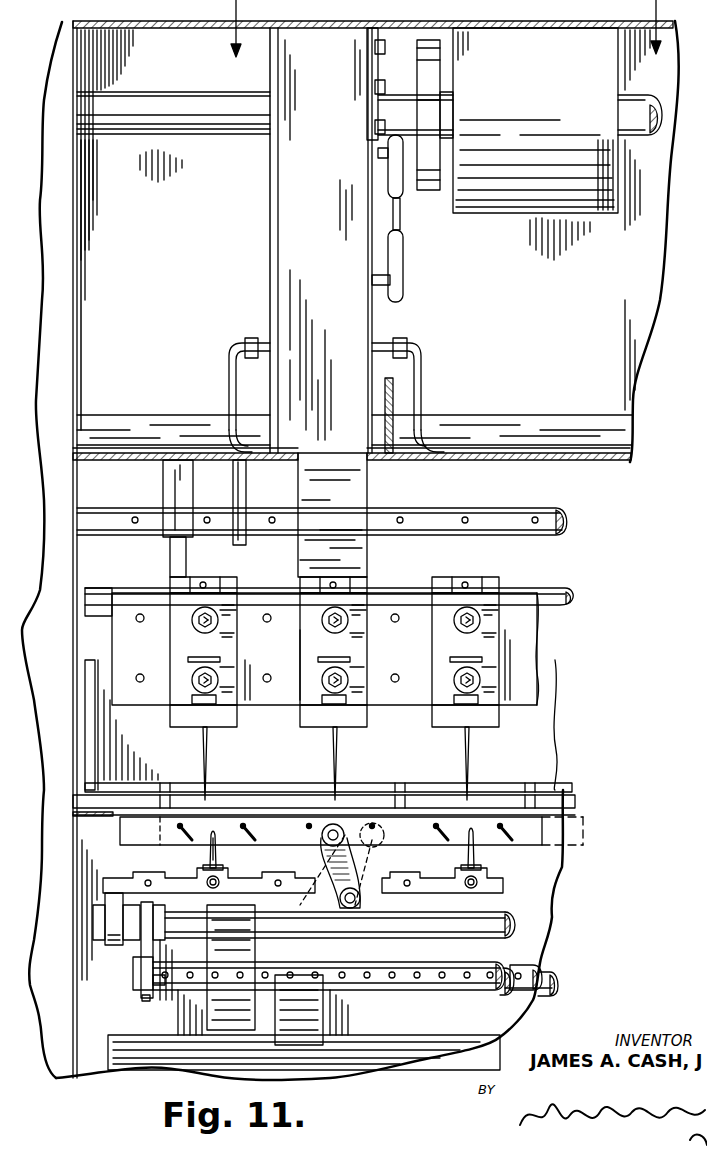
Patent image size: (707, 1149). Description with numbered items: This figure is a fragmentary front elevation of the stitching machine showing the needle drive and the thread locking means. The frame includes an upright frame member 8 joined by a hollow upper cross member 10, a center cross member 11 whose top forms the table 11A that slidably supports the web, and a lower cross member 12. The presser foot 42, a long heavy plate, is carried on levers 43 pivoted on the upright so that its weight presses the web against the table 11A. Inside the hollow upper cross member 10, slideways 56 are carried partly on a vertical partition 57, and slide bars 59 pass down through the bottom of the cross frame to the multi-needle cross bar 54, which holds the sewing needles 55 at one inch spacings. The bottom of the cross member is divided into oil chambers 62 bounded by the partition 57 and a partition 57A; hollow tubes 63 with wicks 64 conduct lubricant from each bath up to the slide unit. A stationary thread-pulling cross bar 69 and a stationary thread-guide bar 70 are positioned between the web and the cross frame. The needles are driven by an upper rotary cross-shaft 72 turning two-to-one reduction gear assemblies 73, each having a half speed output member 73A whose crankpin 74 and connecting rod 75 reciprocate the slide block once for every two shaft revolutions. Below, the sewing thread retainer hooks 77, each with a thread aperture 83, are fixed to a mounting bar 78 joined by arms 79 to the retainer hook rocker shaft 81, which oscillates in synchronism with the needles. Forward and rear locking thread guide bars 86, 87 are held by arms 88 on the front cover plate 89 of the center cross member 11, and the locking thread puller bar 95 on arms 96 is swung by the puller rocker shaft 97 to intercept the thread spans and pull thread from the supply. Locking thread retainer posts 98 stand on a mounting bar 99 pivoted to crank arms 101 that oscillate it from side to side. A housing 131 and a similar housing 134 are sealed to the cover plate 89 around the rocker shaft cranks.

The upright frame member 8 is at (58, 366).
The upper cross member 10 is at (597, 471).
The center cross member 11 is at (570, 883).
The table 11A is at (163, 812).
The lower cross member 12 is at (447, 40).
The presser foot 42 is at (176, 783).
The lever 43 is at (90, 720).
The multi-needle cross bar 54 is at (278, 649).
The sewing needle 55 is at (207, 744).
The slideway 56 is at (336, 259).
The partition 57 is at (272, 243).
The partition 57A is at (394, 388).
The slide bar 59 is at (351, 503).
The oil chamber 62 is at (132, 440).
The hollow tube 63 is at (232, 358).
The wick 64 is at (222, 440).
The thread-pulling cross bar 69 is at (516, 590).
The thread-guide bar 70 is at (490, 510).
The upper rotary cross-shaft 72 is at (210, 108).
The reduction gear assembly 73 is at (545, 106).
The half speed rotary output member 73A is at (430, 84).
The crankpin 74 is at (405, 170).
The connecting rod 75 is at (402, 218).
The sewing thread retainer hook 77 is at (210, 850).
The mounting bar 78 is at (295, 887).
The arm 79 is at (115, 899).
The retainer hook rocker shaft 81 is at (416, 926).
The aperture 83 is at (216, 842).
The forward locking thread guide bar 86 is at (360, 965).
The rear locking thread guide bar 87 is at (519, 965).
The arm 88 is at (142, 998).
The front cover plate 89 is at (542, 910).
The locking thread puller bar 95 is at (508, 968).
The arm 96 is at (142, 948).
The locking thread puller rocker shaft 97 is at (548, 980).
The locking thread retainer post 98 is at (180, 830).
The retainer post mounting bar 99 is at (122, 840).
The crank arm 101 is at (340, 895).
The housing 131 is at (216, 1010).
The housing 134 is at (322, 1020).